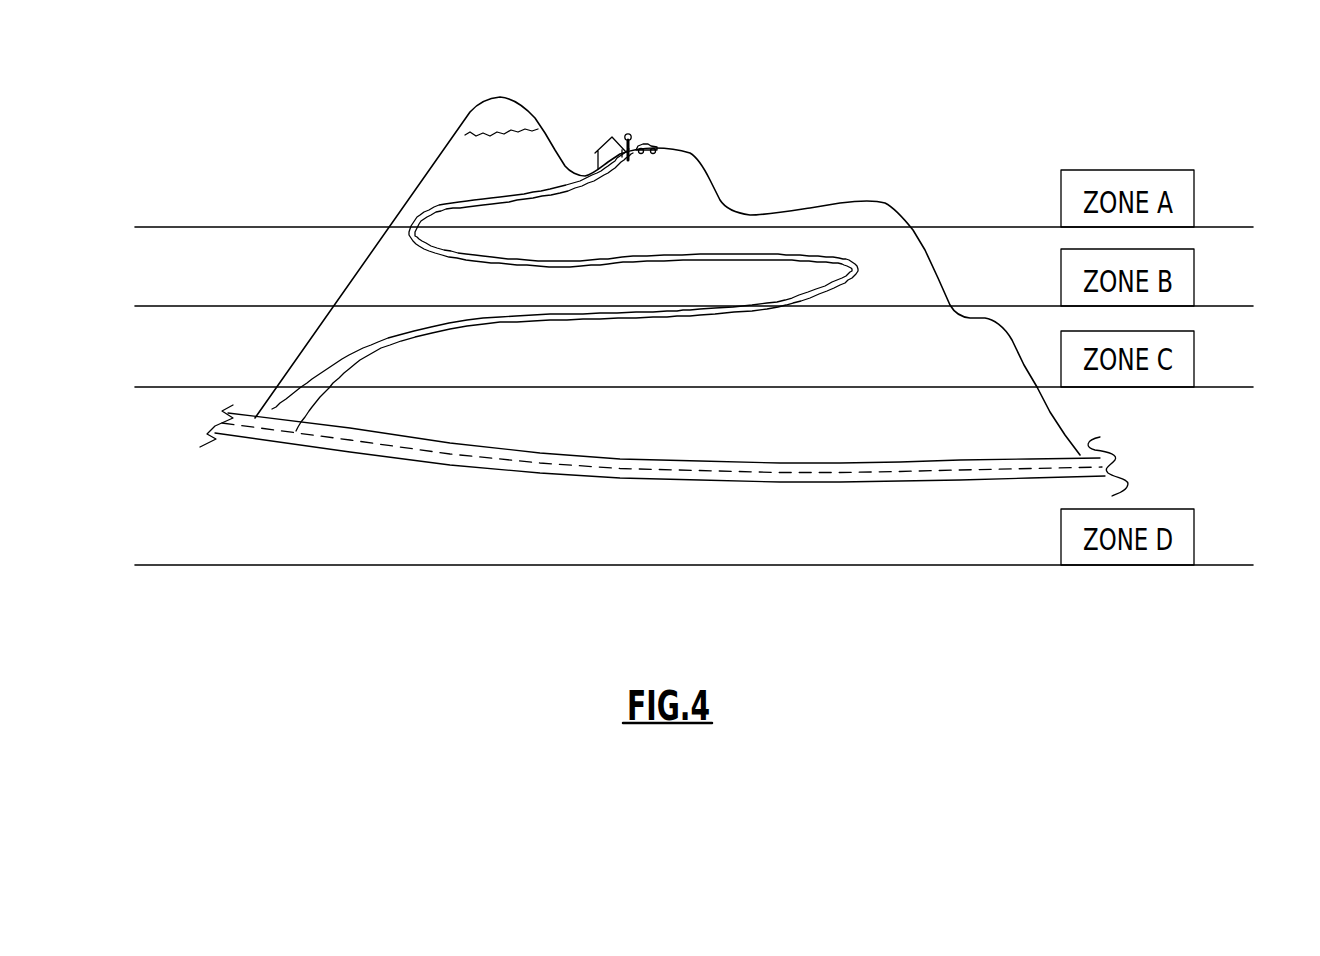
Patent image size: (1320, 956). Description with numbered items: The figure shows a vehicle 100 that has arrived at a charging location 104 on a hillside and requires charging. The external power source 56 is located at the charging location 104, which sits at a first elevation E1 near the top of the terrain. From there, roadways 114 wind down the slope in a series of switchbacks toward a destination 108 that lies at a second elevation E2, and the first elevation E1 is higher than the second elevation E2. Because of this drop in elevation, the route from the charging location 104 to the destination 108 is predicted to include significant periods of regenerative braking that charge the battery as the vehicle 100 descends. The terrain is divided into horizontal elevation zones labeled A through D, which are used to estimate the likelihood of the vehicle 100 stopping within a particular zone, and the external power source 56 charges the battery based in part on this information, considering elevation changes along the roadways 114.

The charging location 104 is at (573, 117).
The external power source 56 is at (628, 135).
The vehicle 100 is at (647, 146).
The first elevation E1 is at (684, 142).
The second elevation E2 is at (254, 401).
The destination 108 is at (277, 445).
The roadways 114 is at (805, 303).